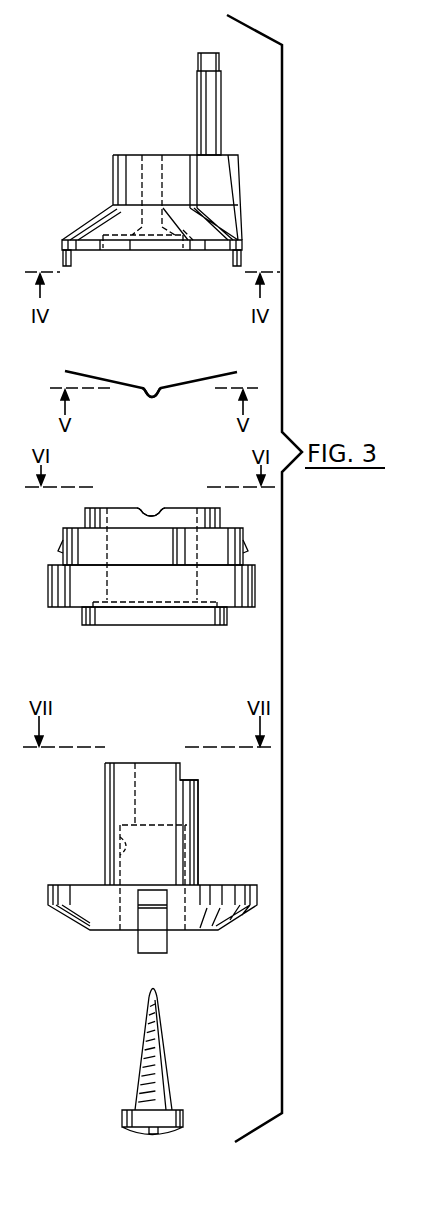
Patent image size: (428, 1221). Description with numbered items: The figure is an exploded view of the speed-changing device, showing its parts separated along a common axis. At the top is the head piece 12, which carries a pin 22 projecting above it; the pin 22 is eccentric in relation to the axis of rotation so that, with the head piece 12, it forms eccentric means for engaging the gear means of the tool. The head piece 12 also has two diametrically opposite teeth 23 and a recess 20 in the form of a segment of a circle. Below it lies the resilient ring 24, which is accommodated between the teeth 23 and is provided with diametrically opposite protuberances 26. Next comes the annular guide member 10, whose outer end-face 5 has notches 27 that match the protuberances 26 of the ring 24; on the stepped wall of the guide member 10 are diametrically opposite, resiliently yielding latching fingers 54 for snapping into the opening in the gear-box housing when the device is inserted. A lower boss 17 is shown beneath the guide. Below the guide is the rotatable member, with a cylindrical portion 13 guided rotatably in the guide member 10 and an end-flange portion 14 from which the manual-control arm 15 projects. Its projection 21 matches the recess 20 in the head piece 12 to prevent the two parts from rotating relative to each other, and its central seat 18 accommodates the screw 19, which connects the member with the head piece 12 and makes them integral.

The outer end-face 5 is at (121, 508).
The annular guide member 10 is at (256, 598).
The head piece 12 is at (118, 184).
The cylindrical portion 13 is at (190, 820).
The end-flange portion 14 is at (88, 916).
The manual-control arm 15 is at (160, 935).
The lower boss 17 is at (128, 616).
The central seat 18 is at (115, 858).
The screw 19 is at (165, 1043).
The recess 20 is at (188, 243).
The projection 21 is at (127, 775).
The pin 22 is at (213, 103).
The teeth 23 is at (241, 258).
The resilient ring 24 is at (122, 383).
The protuberances 26 is at (159, 393).
The notches 27 is at (148, 510).
The latching fingers 54 is at (246, 548).